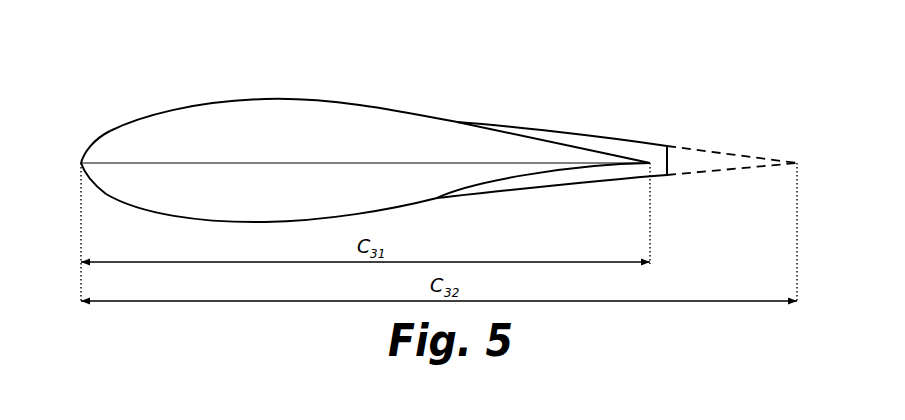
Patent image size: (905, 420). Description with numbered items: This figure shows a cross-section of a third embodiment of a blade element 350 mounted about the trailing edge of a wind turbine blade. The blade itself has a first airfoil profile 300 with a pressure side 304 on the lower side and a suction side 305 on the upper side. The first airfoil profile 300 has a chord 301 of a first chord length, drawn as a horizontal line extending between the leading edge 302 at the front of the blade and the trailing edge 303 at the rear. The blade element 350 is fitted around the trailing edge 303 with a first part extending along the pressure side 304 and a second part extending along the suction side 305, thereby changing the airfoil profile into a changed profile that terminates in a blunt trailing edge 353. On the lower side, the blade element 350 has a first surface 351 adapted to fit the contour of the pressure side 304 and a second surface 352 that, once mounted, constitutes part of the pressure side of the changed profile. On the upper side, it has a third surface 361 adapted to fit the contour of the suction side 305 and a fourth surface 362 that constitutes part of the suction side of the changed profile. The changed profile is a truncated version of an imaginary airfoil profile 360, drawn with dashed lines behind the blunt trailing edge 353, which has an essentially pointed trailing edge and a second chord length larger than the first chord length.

The first airfoil profile 300 is at (439, 63).
The chord 301 is at (473, 163).
The leading edge 302 is at (81, 163).
The trailing edge 303 is at (659, 148).
The pressure side 304 is at (172, 215).
The suction side 305 is at (249, 99).
The blade element 350 is at (592, 142).
The first surface 351 is at (545, 169).
The second surface 352 is at (600, 183).
The blunt trailing edge 353 is at (669, 162).
The imaginary airfoil profile 360 is at (741, 153).
The third surface 361 is at (540, 143).
The fourth surface 362 is at (616, 138).